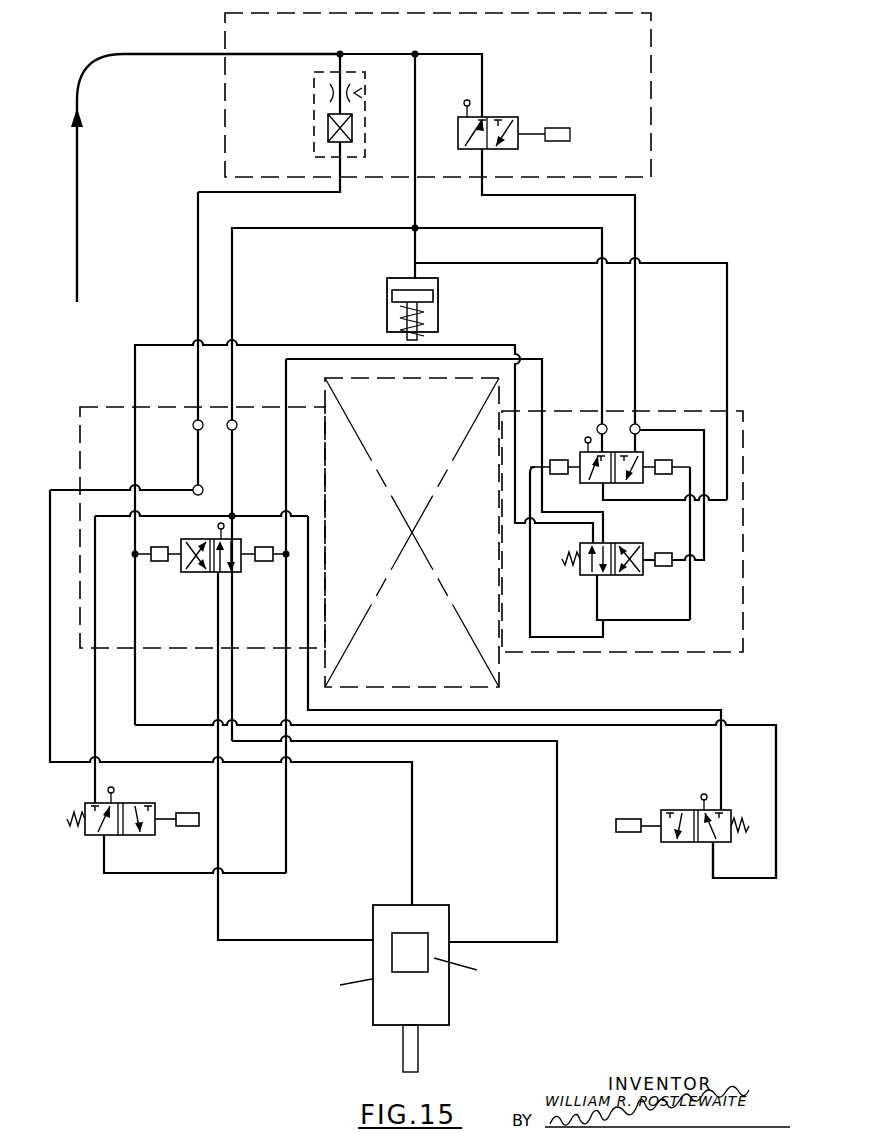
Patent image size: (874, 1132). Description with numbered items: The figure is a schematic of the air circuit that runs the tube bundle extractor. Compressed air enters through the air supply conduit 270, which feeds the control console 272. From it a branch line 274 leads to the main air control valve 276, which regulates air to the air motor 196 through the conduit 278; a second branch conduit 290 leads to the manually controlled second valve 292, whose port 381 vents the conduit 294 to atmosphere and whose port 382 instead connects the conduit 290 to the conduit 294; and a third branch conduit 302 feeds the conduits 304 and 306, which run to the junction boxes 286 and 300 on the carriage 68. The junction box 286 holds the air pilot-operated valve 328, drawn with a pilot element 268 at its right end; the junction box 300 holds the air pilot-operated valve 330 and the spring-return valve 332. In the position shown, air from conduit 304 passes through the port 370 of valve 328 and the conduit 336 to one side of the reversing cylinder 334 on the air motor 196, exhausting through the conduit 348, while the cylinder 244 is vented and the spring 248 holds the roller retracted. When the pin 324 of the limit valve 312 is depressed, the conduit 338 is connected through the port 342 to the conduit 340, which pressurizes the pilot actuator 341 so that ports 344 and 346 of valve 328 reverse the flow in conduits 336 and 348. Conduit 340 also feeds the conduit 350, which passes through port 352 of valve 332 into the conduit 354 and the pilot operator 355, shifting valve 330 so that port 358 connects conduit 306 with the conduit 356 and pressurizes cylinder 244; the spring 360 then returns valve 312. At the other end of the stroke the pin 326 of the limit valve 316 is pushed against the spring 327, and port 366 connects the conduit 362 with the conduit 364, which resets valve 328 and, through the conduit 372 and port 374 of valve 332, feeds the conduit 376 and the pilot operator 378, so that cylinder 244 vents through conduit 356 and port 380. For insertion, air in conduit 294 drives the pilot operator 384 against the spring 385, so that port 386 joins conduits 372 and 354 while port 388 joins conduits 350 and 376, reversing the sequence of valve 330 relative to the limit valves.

The air supply conduit 270 is at (78, 218).
The branch line 274 is at (337, 58).
The main air control valve 276 is at (313, 152).
The conduit 278 is at (198, 263).
The second branch conduit 290 is at (482, 75).
The second valve 292 is at (500, 117).
The conduit 294 is at (638, 232).
The third branch conduit 302 is at (415, 100).
The conduit 304 is at (320, 228).
The conduit 306 is at (478, 228).
The control console 272 is at (652, 97).
The valve port 381 is at (471, 149).
The valve port 382 is at (505, 150).
The air cylinder 244 is at (424, 320).
The spring 248 is at (438, 325).
The conduit 356 is at (728, 335).
The conduit 350 is at (135, 363).
The junction box 286 is at (95, 405).
The air pilot-operated valve 328 is at (187, 538).
The conduit 372 is at (286, 478).
The pilot port 268 is at (265, 545).
The pilot actuator 341 is at (159, 561).
The valve port 346 is at (196, 573).
The valve port 344 is at (208, 572).
The valve port 370 is at (233, 551).
The carriage 68 is at (425, 445).
The pilot operator 378 is at (561, 460).
The air pilot-operated valve 330 is at (642, 455).
The pilot operator 355 is at (666, 460).
The valve port 358 is at (598, 472).
The valve port 380 is at (636, 468).
The spring 385 is at (563, 557).
The valve port 386 is at (642, 545).
The valve port 352 is at (589, 563).
The valve port 374 is at (603, 562).
The conduit 354 is at (591, 613).
The air pilot-operated spring-return valve 332 is at (643, 570).
The pilot operator 384 is at (666, 568).
The valve port 388 is at (639, 575).
The conduit 376 is at (527, 598).
The junction box 300 is at (728, 655).
The air conduit 338 is at (587, 713).
The conduit 362 is at (93, 780).
The valve port 366 is at (137, 803).
The second limit valve 316 is at (157, 808).
The spring 327 is at (67, 821).
The pin 326 is at (192, 828).
The conduit 364 is at (288, 822).
The conduit 348 is at (278, 940).
The conduit 336 is at (556, 840).
The limit valve 312 is at (661, 812).
The valve port 342 is at (679, 812).
The spring 360 is at (740, 818).
The pin 324 is at (627, 819).
The conduit 340 is at (752, 882).
The air motor 196 is at (372, 1008).
The reversing cylinder 334 is at (434, 964).